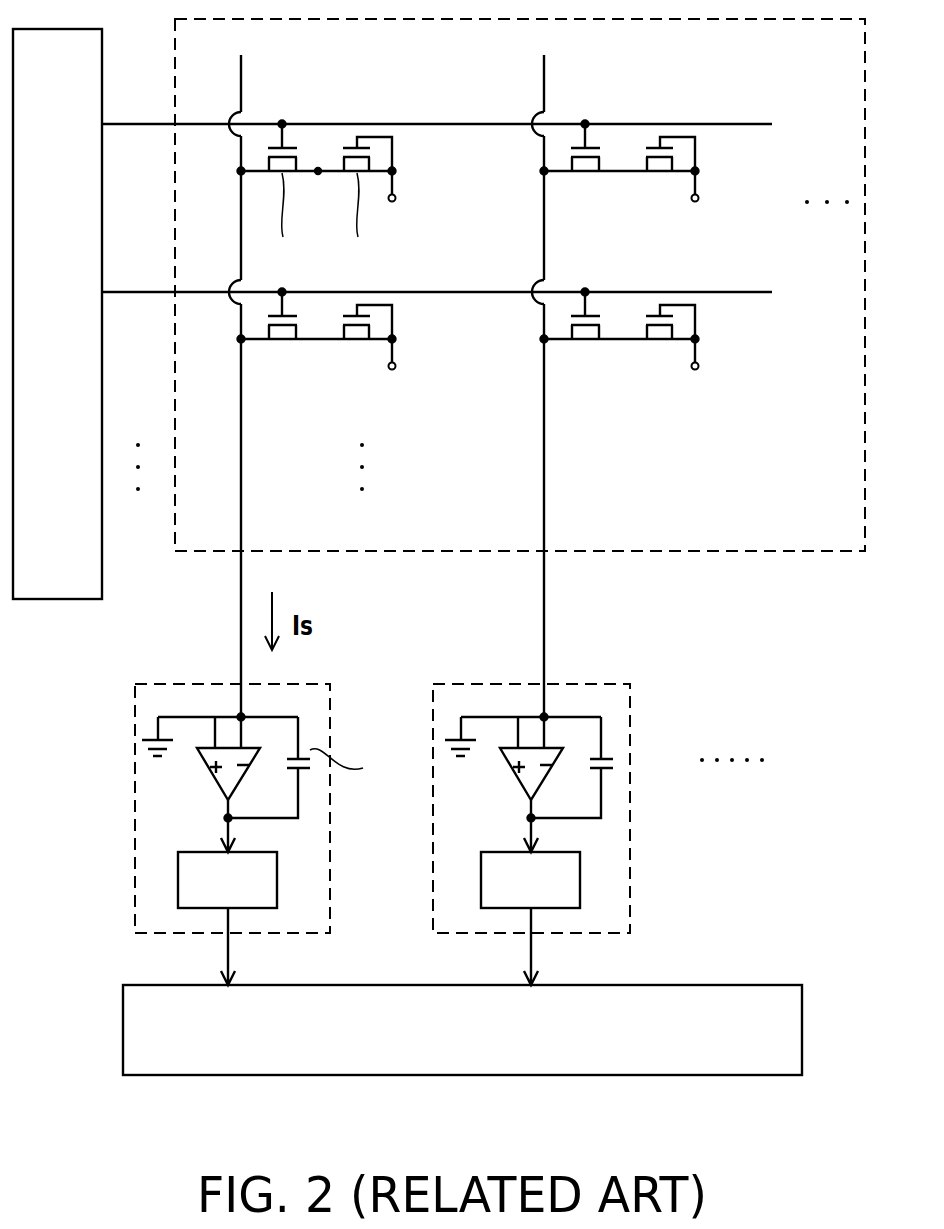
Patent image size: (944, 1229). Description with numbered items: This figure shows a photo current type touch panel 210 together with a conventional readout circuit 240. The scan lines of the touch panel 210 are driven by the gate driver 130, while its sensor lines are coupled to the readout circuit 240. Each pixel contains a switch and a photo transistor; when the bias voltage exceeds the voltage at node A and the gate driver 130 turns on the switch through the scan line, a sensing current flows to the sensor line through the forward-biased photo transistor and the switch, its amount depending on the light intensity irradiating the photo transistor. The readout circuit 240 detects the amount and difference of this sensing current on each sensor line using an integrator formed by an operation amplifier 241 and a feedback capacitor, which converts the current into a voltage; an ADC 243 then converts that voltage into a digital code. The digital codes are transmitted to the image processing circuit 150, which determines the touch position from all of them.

The gate driver 130 is at (53, 600).
The image processing circuit 150 is at (802, 1028).
The touch panel 210 is at (770, 552).
The readout circuit 240 is at (396, 834).
The operation amplifier 241 is at (205, 765).
The ADC 243 is at (278, 880).